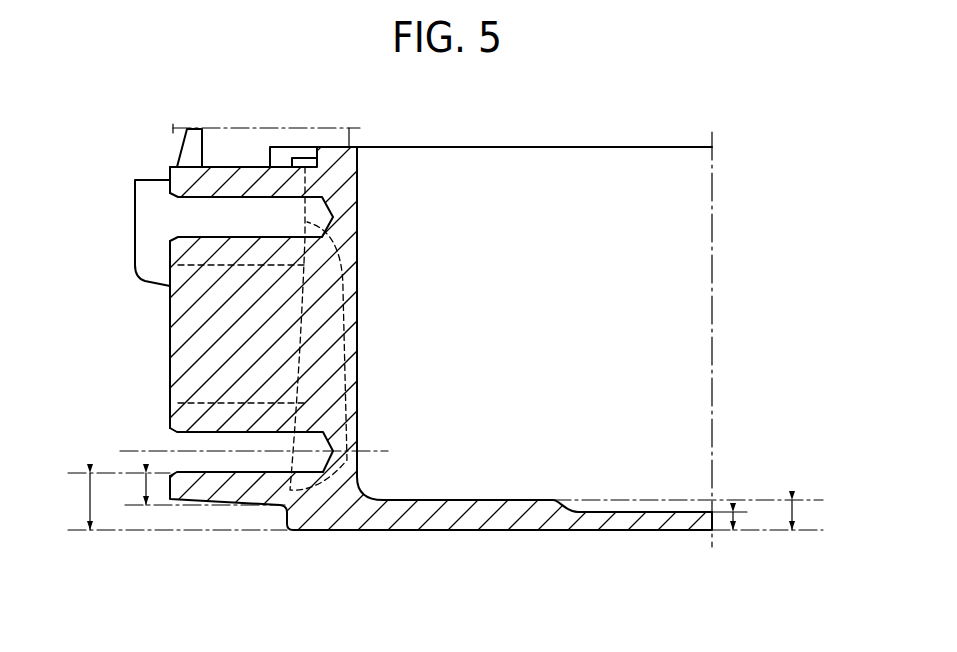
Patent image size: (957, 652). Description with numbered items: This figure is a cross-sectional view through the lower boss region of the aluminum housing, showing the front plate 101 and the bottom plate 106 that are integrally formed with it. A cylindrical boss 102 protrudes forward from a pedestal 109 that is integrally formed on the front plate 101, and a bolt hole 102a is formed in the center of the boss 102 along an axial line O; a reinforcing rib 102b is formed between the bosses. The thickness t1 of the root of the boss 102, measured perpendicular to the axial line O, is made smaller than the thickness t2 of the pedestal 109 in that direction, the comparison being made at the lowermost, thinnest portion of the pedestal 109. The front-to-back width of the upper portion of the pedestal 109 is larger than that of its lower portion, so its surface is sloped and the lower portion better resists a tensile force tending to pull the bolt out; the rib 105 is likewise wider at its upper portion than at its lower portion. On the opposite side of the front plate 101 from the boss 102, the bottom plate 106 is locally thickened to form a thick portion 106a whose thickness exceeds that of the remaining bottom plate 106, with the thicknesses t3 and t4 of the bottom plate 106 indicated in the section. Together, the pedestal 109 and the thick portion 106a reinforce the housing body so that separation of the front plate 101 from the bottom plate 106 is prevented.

The front plate 101 is at (352, 346).
The boss 102 is at (262, 178).
The bolt hole 102a is at (225, 212).
The reinforcing rib 102b is at (195, 342).
The rib 105 is at (323, 297).
The bottom plate 106 is at (622, 525).
The thick portion 106a is at (478, 507).
The pedestal 109 is at (395, 328).
The axial line O is at (377, 456).
The thickness of the root of the boss t1 is at (176, 489).
The thickness of the pedestal t2 is at (174, 501).
The thickness t3 is at (737, 518).
The thickness t4 is at (808, 515).